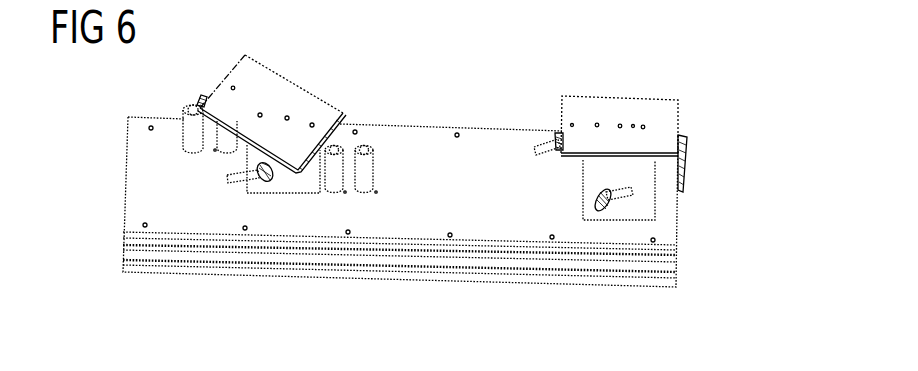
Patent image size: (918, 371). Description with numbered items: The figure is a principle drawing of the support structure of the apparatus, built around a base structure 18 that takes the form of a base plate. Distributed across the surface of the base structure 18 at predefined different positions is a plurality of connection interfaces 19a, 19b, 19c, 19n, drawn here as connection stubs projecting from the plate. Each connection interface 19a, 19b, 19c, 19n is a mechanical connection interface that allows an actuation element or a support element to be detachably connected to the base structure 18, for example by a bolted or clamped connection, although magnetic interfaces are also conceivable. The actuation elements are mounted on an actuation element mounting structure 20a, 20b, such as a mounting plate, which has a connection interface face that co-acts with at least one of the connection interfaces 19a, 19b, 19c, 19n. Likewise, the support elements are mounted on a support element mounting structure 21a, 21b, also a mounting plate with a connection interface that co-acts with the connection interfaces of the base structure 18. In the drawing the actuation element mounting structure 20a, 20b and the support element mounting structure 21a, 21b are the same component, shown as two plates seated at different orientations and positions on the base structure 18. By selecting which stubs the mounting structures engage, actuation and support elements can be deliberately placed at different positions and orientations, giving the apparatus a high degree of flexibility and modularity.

The base structure 18 is at (502, 242).
The connection interface 19a is at (194, 136).
The connection interface 19b is at (227, 143).
The connection interface 19c is at (335, 180).
The connection interface 19n is at (363, 183).
The actuation element mounting structure 20a is at (300, 105).
The support element mounting structure 21a is at (296, 108).
The actuation element mounting structure 20b is at (633, 108).
The support element mounting structure 21b is at (641, 124).